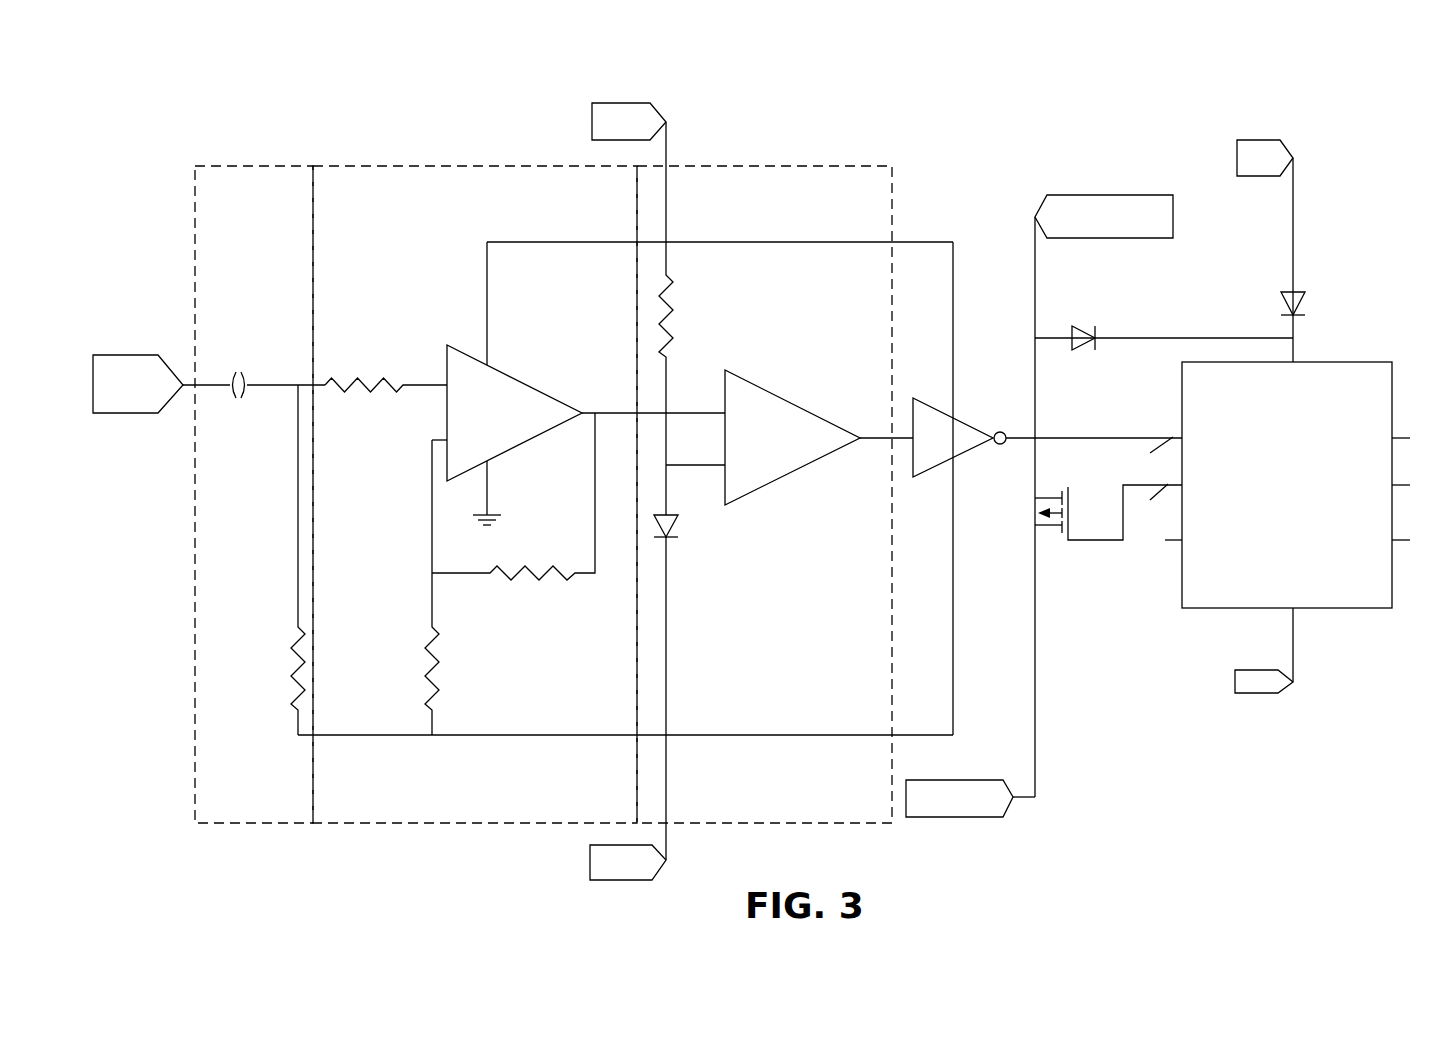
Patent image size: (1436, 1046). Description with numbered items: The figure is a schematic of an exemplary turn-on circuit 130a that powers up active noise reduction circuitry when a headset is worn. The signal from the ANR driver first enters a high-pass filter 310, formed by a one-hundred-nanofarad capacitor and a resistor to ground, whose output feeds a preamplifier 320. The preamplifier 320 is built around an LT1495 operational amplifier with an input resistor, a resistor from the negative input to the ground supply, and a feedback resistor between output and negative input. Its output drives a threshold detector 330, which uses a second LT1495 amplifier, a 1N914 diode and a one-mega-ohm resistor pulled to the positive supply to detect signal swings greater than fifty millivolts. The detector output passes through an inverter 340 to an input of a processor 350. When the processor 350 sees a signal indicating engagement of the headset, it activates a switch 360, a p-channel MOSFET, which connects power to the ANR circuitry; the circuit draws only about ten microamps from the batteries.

The turn-on circuit 130a is at (1201, 110).
The high-pass filter 310 is at (258, 166).
The preamplifier 320 is at (483, 166).
The threshold detector 330 is at (762, 166).
The inverter 340 is at (913, 463).
The processor 350 is at (1347, 363).
The switch 360 is at (1035, 526).